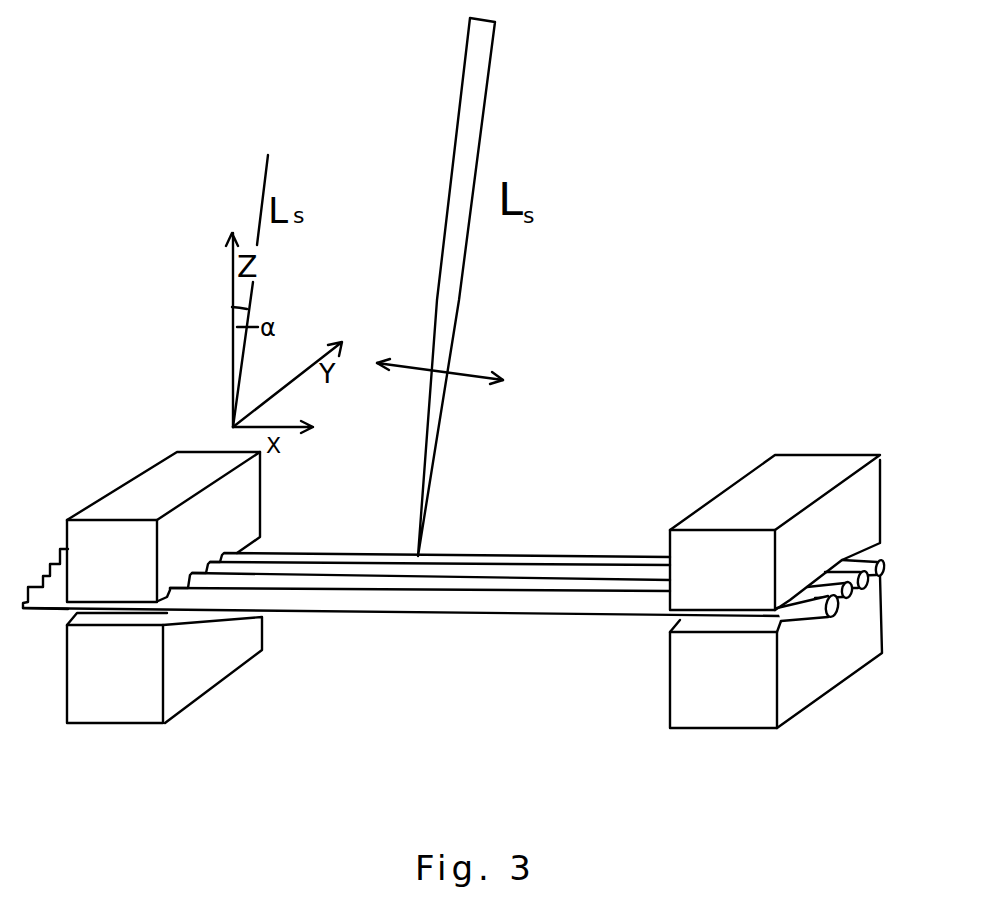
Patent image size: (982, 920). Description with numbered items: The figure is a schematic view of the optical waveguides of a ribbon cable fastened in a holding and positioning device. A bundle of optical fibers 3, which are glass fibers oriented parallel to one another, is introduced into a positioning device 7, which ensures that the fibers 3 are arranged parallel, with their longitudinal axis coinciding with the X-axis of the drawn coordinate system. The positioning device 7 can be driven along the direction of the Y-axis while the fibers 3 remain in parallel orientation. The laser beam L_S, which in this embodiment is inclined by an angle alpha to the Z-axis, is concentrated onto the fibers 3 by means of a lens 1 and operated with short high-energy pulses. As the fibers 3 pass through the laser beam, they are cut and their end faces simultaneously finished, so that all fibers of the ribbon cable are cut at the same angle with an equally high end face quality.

The lens 1 is at (480, 370).
The optical fiber 3 is at (550, 605).
The positioning device 7 is at (102, 547).